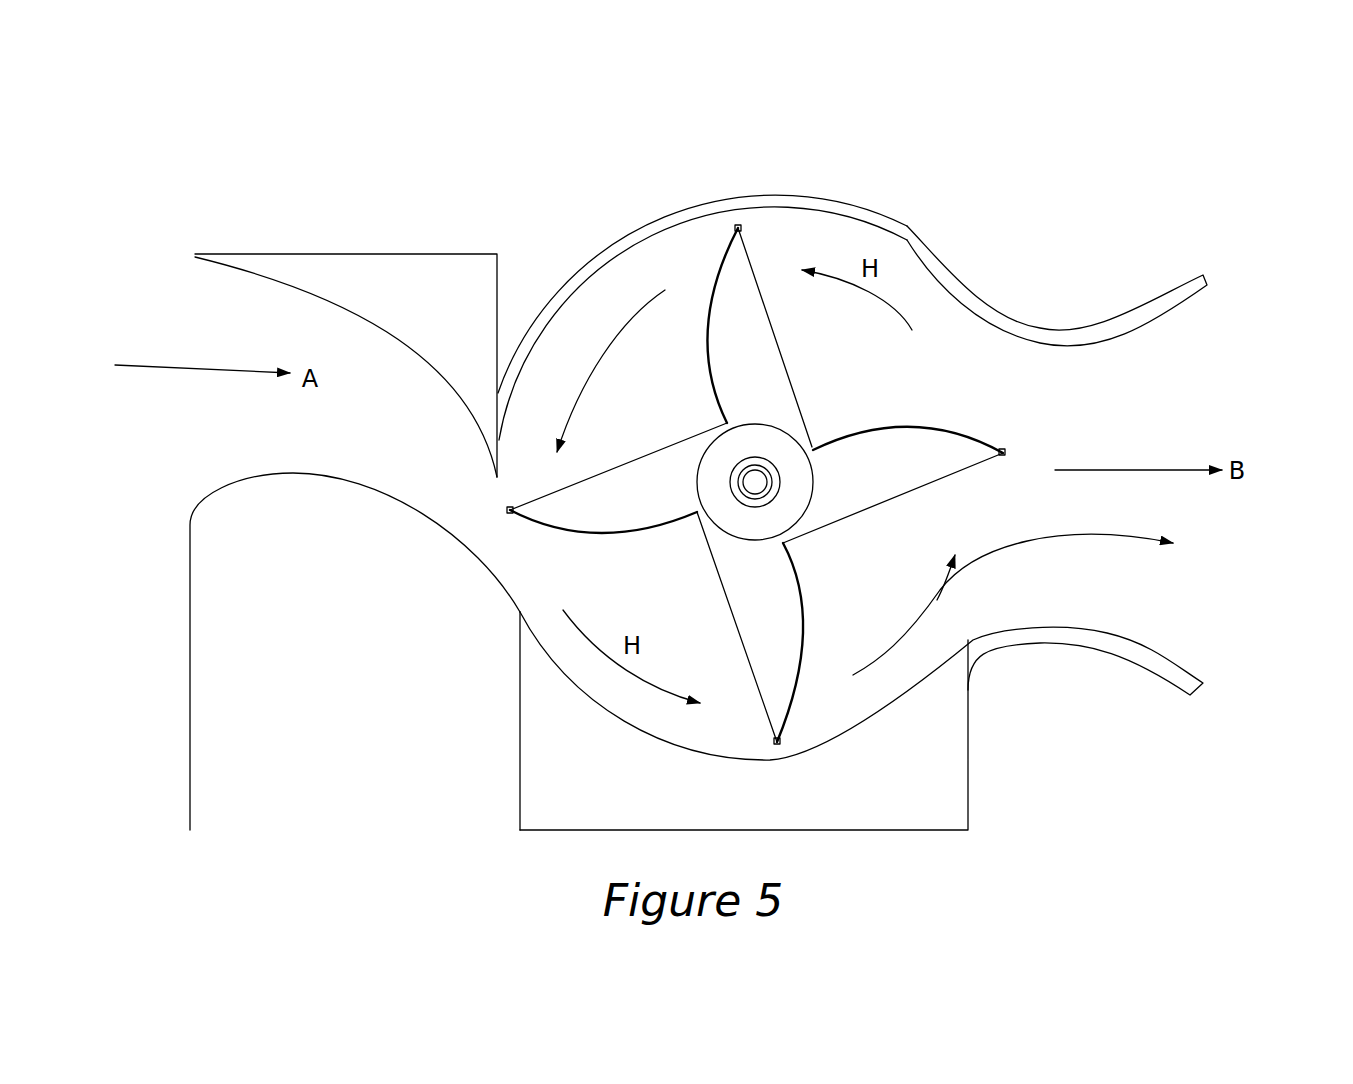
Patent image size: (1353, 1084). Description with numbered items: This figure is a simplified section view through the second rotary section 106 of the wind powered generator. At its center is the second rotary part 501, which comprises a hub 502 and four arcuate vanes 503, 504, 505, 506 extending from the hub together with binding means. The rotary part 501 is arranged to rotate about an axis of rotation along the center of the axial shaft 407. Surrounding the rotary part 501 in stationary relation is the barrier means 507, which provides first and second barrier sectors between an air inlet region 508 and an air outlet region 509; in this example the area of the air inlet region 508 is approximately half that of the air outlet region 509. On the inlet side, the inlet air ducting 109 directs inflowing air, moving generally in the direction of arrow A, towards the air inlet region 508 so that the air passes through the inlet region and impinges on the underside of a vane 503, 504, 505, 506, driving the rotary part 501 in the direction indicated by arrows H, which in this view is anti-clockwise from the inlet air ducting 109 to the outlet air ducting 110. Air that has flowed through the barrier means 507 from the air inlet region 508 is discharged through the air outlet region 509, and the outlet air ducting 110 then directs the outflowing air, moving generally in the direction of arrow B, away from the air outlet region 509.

The second rotary section 106 is at (889, 204).
The inlet air ducting 109 is at (277, 249).
The outlet air ducting 110 is at (1085, 317).
The axial shaft 407 is at (742, 481).
The second rotary part 501 is at (817, 472).
The hub 502 is at (783, 503).
The arcuate vane 503 is at (990, 446).
The arcuate vane 504 is at (713, 272).
The arcuate vane 505 is at (584, 543).
The arcuate vane 506 is at (801, 702).
The barrier means 507 is at (590, 252).
The air inlet region 508 is at (455, 441).
The air outlet region 509 is at (1142, 404).